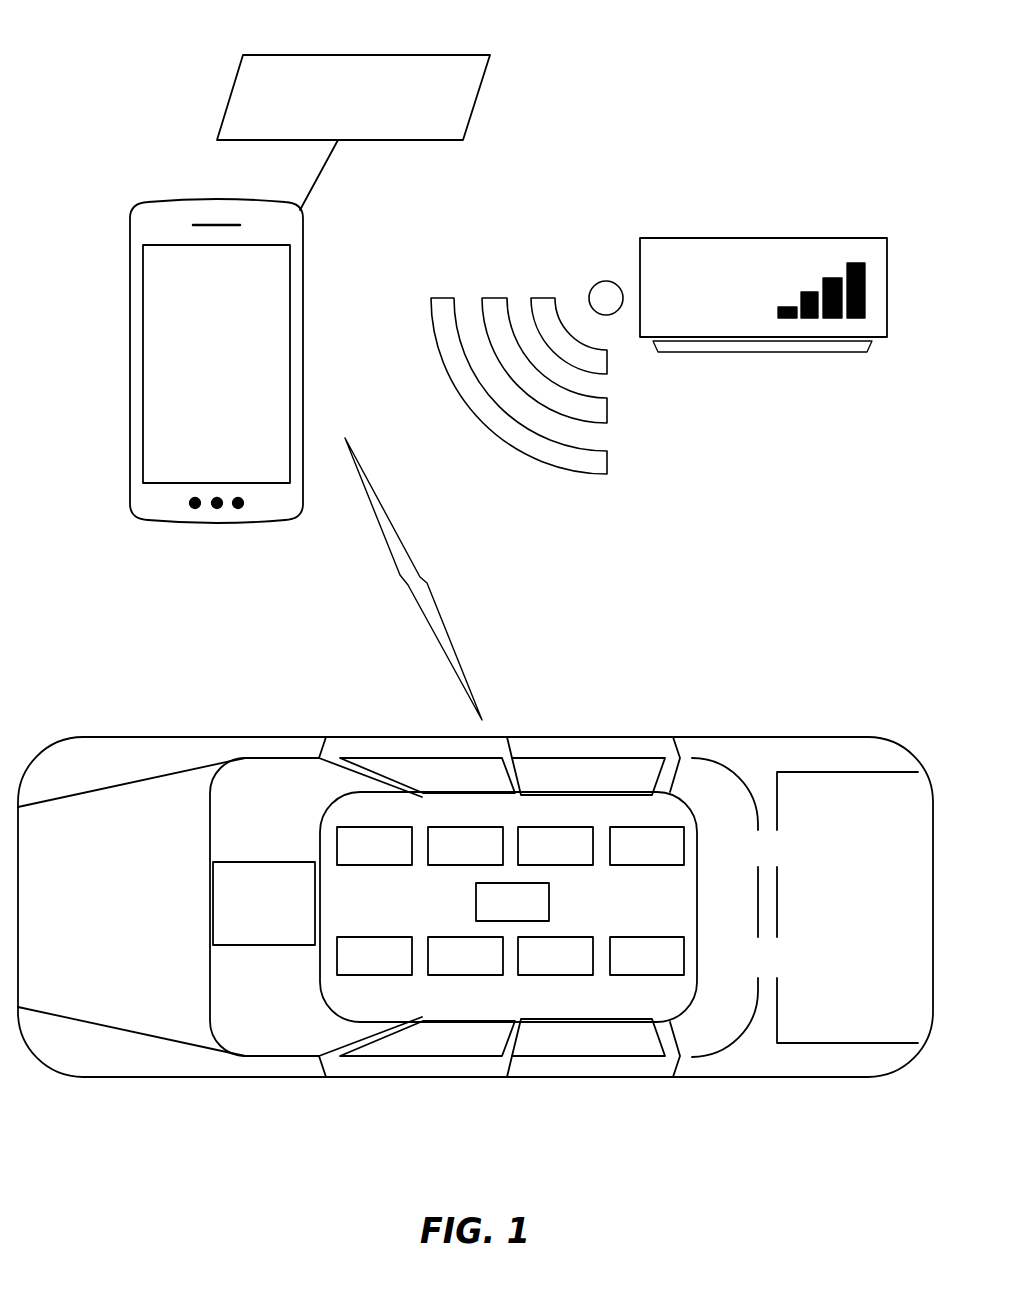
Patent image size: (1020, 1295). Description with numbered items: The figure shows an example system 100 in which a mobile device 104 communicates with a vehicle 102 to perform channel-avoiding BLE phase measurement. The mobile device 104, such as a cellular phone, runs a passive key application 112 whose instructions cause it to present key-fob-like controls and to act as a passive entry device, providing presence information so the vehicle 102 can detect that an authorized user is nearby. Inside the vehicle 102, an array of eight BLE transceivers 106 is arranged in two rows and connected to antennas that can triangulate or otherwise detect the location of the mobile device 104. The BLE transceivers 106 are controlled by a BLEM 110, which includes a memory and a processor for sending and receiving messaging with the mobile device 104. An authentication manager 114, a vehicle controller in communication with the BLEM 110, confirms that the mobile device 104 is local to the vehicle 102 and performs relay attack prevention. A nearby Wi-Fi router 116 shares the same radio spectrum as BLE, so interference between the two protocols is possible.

The system 100 is at (138, 35).
The vehicle 102 is at (147, 932).
The mobile device 104 is at (202, 589).
The BLE transceivers 106 is at (707, 820).
The BLEM 110 is at (550, 902).
The passive key application 112 is at (337, 124).
The authentication manager 114 is at (265, 860).
The Wi-Fi router 116 is at (782, 416).